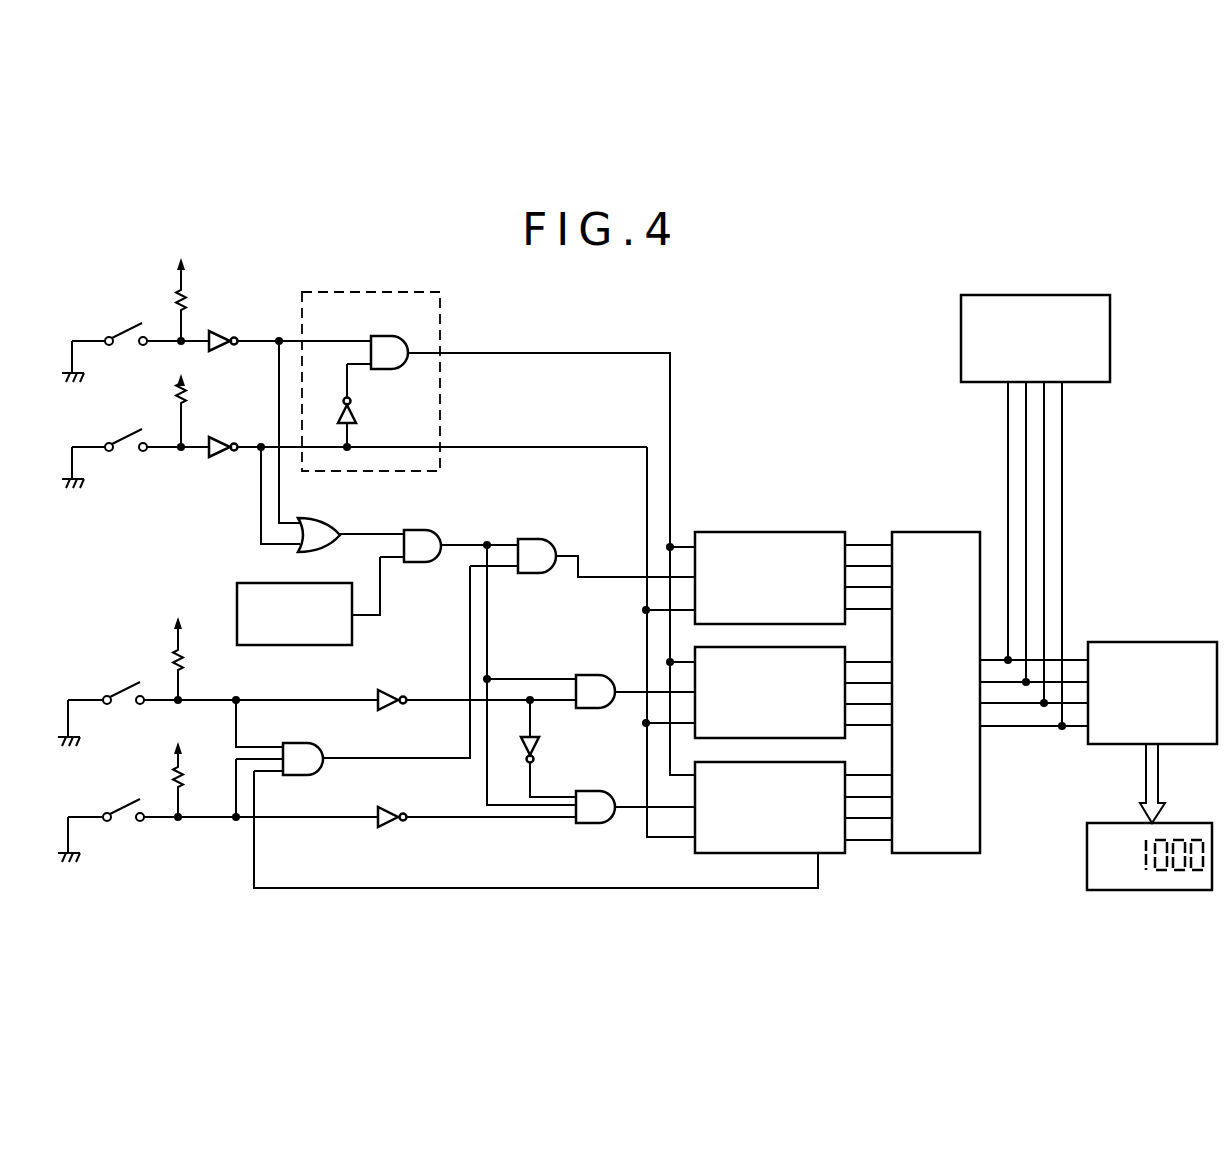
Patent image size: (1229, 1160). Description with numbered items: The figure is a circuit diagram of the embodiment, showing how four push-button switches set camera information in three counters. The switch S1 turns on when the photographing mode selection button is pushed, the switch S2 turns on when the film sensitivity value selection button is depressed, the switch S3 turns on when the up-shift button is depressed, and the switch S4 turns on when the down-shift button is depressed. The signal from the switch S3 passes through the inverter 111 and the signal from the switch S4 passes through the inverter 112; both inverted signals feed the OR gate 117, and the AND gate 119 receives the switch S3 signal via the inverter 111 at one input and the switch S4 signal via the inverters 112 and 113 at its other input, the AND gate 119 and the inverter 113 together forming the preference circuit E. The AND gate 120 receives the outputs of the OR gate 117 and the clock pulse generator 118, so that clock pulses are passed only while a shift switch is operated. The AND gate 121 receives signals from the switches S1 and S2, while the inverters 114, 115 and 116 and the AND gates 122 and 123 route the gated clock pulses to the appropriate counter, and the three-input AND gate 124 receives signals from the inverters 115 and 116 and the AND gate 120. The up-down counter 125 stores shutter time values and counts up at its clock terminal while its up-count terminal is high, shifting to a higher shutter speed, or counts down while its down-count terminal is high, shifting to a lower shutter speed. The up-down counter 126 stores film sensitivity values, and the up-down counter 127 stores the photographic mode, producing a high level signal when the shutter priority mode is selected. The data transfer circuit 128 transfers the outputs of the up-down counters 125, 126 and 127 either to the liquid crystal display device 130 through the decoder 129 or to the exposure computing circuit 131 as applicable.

The inverter 111 is at (216, 331).
The inverter 112 is at (216, 437).
The inverter 113 is at (352, 406).
The inverter 114 is at (387, 690).
The inverter 115 is at (387, 807).
The inverter 116 is at (536, 745).
The OR gate 117 is at (318, 516).
The clock pulse generator 118 is at (327, 583).
The AND gate 119 is at (395, 336).
The AND gate 120 is at (418, 530).
The AND gate 121 is at (310, 743).
The AND gate 122 is at (530, 539).
The AND gate 123 is at (590, 675).
The three-input AND gate 124 is at (600, 791).
The up-down counter 125 is at (822, 532).
The up-down counter 126 is at (833, 647).
The up-down counter 127 is at (833, 762).
The data transfer circuit 128 is at (954, 532).
The decoder 129 is at (1193, 642).
The liquid crystal display device 130 is at (1190, 823).
The exposure computing circuit 131 is at (1073, 295).
The switch S1 is at (129, 798).
The switch S2 is at (129, 681).
The switch S3 is at (131, 322).
The switch S4 is at (131, 428).
The preference circuit E is at (400, 292).